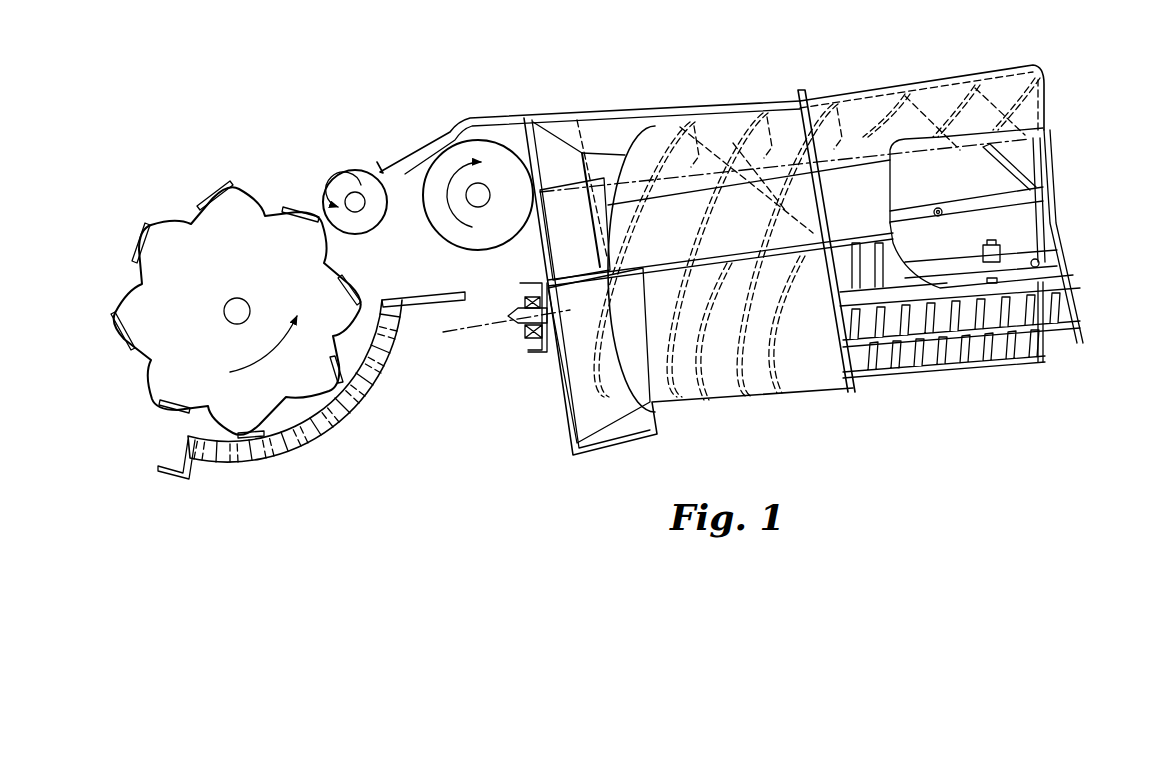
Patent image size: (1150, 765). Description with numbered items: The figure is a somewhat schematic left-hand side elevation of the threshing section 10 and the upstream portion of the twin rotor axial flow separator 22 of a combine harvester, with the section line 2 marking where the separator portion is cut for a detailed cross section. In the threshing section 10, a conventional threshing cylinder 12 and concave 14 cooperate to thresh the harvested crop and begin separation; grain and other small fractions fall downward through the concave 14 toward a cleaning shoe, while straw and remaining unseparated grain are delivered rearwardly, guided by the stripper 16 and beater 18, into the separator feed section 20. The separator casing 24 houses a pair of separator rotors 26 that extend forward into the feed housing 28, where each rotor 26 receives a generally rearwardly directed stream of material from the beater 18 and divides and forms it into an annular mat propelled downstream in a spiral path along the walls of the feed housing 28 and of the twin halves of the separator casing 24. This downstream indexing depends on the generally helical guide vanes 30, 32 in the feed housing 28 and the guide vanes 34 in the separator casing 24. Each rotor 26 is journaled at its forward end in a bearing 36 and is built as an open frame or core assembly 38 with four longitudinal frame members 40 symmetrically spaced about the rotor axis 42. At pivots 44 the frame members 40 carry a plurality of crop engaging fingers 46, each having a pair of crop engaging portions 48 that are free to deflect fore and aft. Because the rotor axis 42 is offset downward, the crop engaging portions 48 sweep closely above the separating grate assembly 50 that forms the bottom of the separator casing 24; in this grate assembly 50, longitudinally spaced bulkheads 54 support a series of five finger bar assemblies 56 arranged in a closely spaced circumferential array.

The threshing section 10 is at (224, 142).
The threshing cylinder 12 is at (175, 225).
The concave 14 is at (268, 456).
The stripper 16 is at (345, 170).
The beater 18 is at (437, 233).
The separator feed section 20 is at (680, 70).
The separator 22 is at (905, 48).
The separator casing 24 is at (865, 95).
The separator rotor 26 is at (1068, 200).
The feed housing 28 is at (600, 112).
The helical guide vane 30 is at (737, 390).
The helical guide vane 32 is at (740, 128).
The separator guide vane 34 is at (1048, 88).
The bearing 36 is at (443, 290).
The core assembly 38 is at (1066, 252).
The longitudinal frame member 40 is at (953, 200).
The rotor axis 42 is at (460, 330).
The pivot 44 is at (1040, 248).
The crop engaging finger 46 is at (1055, 160).
The crop engaging portion 48 is at (1040, 127).
The separating grate assembly 50 is at (1052, 354).
The bulkhead 54 is at (1045, 362).
The finger bar assembly 56 is at (1083, 330).
The section line 2- 2 is at (997, 37).